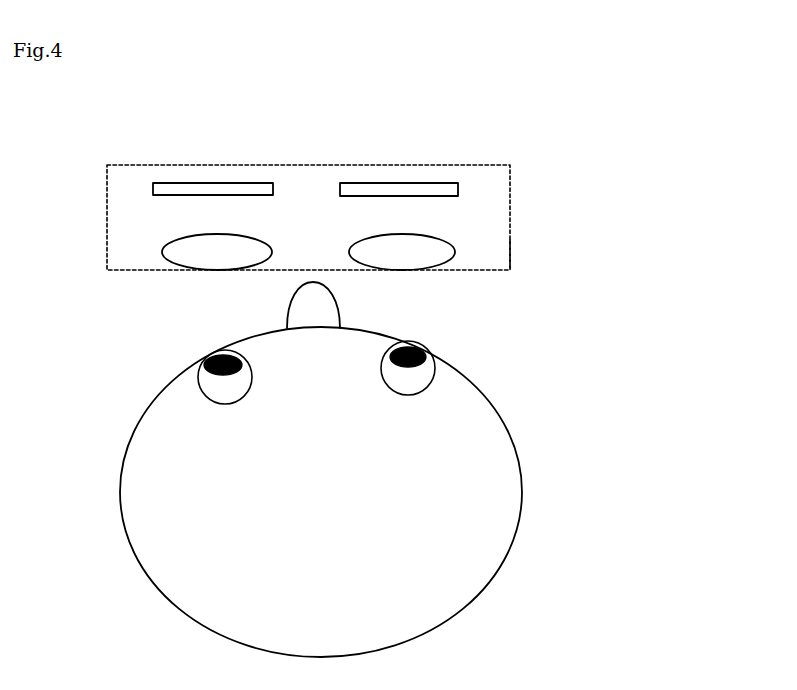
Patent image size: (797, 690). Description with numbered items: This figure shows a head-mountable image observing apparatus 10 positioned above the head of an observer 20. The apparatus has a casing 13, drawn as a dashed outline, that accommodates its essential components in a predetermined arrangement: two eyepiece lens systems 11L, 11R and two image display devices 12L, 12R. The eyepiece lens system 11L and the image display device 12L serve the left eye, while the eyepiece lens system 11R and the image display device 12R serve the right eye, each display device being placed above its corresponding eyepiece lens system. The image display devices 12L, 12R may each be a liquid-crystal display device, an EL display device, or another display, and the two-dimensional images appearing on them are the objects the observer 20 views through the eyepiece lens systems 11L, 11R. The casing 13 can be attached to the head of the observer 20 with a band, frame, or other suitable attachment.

The image observing apparatus 10 is at (506, 156).
The eyepiece lens system 11L is at (208, 236).
The eyepiece lens system 11R is at (423, 247).
The image display device 12L is at (266, 187).
The image display device 12R is at (377, 190).
The casing 13 is at (519, 255).
The observer 20 is at (507, 472).